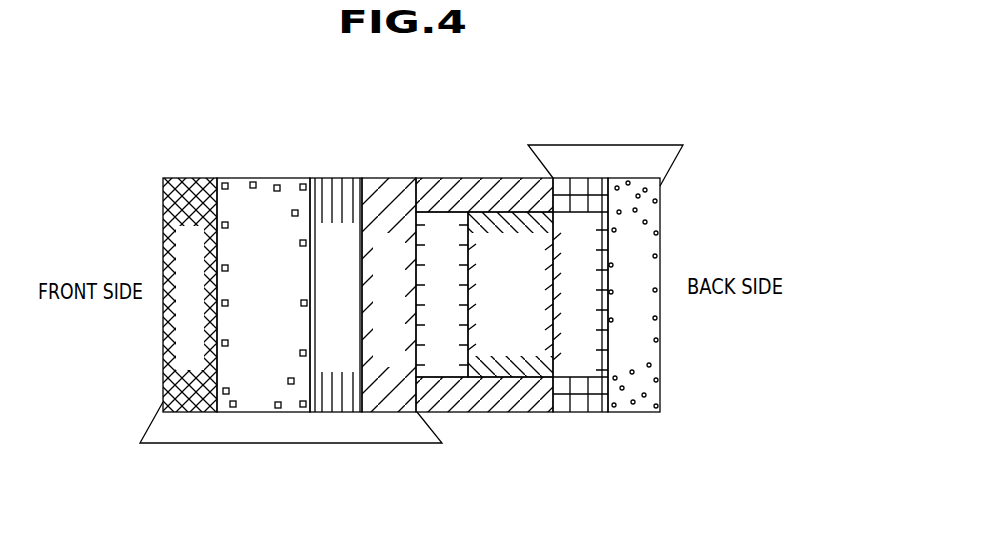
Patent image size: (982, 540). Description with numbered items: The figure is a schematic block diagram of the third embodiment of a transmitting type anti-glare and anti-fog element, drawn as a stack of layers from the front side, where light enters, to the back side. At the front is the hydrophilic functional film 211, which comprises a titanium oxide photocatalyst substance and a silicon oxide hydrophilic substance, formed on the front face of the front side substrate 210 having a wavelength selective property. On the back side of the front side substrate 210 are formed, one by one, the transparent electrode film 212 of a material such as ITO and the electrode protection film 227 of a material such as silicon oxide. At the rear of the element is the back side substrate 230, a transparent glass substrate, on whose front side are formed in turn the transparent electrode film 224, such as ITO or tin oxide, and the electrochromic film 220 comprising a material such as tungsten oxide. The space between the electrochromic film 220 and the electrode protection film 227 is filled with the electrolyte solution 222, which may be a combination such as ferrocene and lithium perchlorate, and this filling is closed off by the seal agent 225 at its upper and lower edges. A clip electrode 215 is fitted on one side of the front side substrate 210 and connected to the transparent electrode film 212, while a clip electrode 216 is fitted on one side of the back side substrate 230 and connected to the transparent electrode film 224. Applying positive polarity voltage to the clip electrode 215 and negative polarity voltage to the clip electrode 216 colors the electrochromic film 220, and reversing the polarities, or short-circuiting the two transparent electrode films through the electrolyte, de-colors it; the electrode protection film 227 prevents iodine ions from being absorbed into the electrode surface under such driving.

The front side substrate 210 is at (262, 410).
The hydrophilic functional film 211 is at (198, 413).
The transparent electrode film 212 is at (337, 412).
The clip electrode 215 is at (163, 425).
The clip electrode 216 is at (658, 158).
The electrochromic film 220 is at (508, 202).
The electrolyte solution 222 is at (462, 210).
The transparent electrode film 224 is at (583, 404).
The seal agent 225 is at (432, 200).
The electrode protection film 227 is at (390, 412).
The back side substrate 230 is at (635, 404).